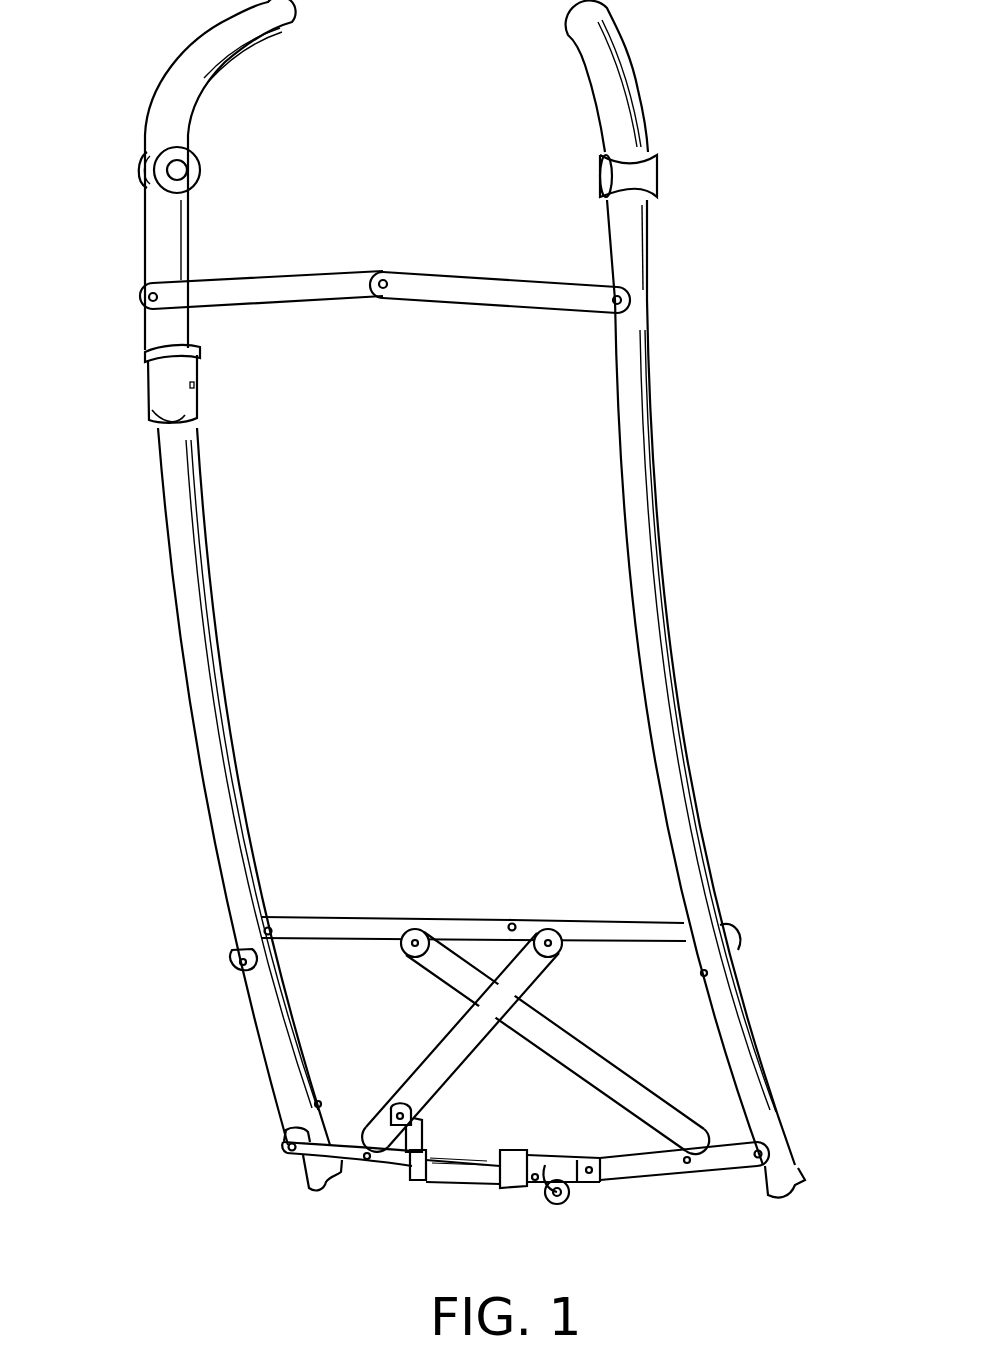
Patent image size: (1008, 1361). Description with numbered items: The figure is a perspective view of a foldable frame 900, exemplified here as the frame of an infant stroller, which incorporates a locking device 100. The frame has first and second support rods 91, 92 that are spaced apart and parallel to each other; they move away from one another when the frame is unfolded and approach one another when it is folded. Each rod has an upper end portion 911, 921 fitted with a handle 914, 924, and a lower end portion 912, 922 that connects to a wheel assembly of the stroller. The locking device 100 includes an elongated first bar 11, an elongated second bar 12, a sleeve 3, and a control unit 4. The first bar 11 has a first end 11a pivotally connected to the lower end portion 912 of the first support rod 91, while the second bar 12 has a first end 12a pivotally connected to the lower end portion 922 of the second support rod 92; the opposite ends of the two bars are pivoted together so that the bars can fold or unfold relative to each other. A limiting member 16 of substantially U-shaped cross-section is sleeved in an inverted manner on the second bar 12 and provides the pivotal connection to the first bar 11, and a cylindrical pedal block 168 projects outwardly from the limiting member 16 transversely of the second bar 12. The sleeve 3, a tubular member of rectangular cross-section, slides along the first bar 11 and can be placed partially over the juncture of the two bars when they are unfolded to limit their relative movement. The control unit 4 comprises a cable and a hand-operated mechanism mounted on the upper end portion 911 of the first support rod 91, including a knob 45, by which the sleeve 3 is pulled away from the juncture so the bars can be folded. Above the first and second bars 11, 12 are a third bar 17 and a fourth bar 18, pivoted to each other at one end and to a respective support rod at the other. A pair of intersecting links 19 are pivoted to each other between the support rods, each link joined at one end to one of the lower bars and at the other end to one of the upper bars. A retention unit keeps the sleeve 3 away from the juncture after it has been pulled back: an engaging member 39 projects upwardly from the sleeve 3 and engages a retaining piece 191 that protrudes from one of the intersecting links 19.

The foldable frame 900 is at (747, 484).
The first support rod 91 is at (232, 792).
The second support rod 92 is at (695, 790).
The handle 914 is at (210, 45).
The handle 924 is at (610, 44).
The upper end portion 911 is at (168, 328).
The upper end portion 921 is at (640, 355).
The lower end portion 912 is at (315, 1170).
The lower end portion 922 is at (793, 1168).
The control unit 4 is at (130, 409).
The knob 45 is at (158, 388).
The third bar 17 is at (335, 925).
The fourth bar 18 is at (604, 925).
The intersecting links 19 is at (457, 1037).
The retaining piece 191 is at (400, 1108).
The engaging member 39 is at (422, 1131).
The first bar 11 is at (350, 1157).
The first end 11a is at (286, 1142).
The second bar 12 is at (712, 1160).
The first end 12a is at (760, 1147).
The sleeve 3 is at (418, 1175).
The limiting member 16 is at (564, 1156).
The pedal block 168 is at (563, 1200).
The locking device 100 is at (630, 1135).